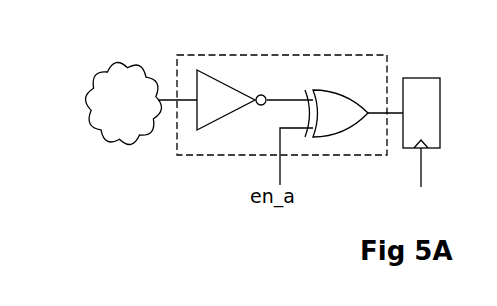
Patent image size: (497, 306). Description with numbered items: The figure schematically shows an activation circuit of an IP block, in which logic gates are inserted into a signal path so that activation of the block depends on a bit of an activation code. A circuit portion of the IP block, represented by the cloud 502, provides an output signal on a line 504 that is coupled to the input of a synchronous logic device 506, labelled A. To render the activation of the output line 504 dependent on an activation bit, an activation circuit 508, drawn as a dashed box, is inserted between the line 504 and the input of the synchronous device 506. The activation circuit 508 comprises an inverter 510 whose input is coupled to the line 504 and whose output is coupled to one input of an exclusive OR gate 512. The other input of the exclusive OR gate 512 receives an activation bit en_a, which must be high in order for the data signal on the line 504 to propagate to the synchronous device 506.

The cloud 502 is at (117, 127).
The line 504 is at (169, 100).
The synchronous logic device 506 is at (428, 78).
The activation circuit 508 is at (281, 58).
The inverter 510 is at (212, 108).
The exclusive OR gate 512 is at (358, 82).